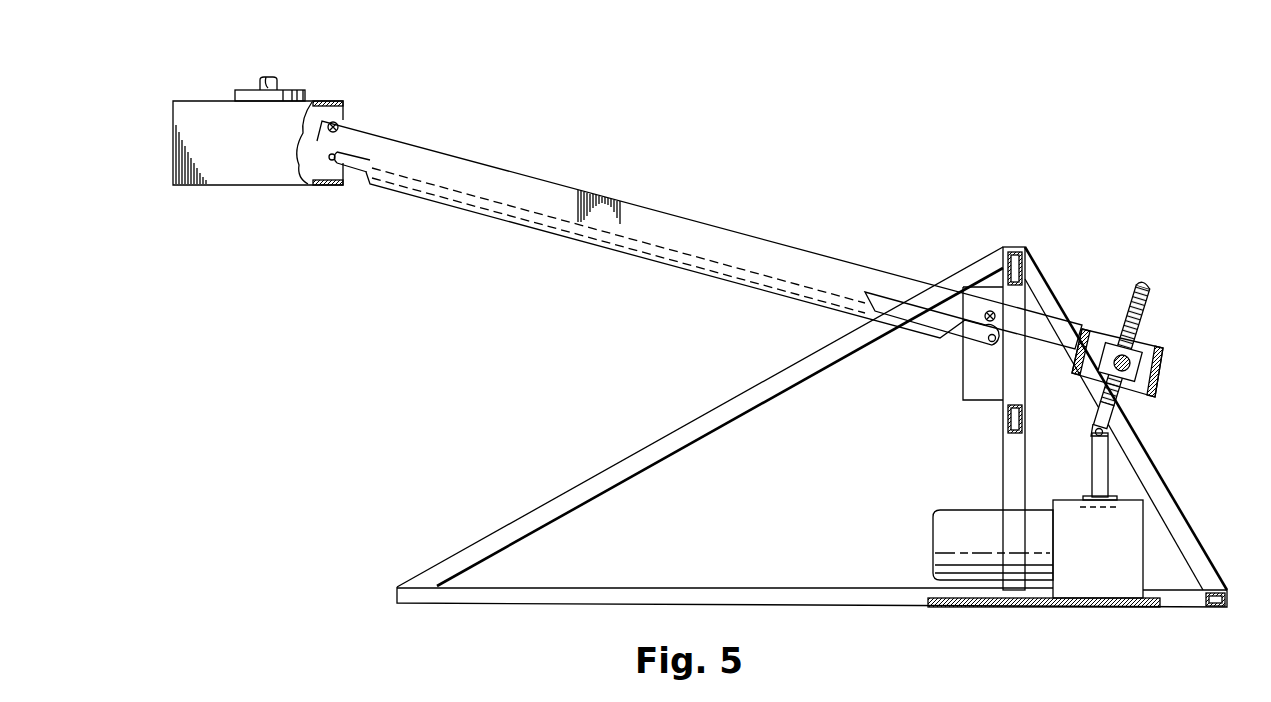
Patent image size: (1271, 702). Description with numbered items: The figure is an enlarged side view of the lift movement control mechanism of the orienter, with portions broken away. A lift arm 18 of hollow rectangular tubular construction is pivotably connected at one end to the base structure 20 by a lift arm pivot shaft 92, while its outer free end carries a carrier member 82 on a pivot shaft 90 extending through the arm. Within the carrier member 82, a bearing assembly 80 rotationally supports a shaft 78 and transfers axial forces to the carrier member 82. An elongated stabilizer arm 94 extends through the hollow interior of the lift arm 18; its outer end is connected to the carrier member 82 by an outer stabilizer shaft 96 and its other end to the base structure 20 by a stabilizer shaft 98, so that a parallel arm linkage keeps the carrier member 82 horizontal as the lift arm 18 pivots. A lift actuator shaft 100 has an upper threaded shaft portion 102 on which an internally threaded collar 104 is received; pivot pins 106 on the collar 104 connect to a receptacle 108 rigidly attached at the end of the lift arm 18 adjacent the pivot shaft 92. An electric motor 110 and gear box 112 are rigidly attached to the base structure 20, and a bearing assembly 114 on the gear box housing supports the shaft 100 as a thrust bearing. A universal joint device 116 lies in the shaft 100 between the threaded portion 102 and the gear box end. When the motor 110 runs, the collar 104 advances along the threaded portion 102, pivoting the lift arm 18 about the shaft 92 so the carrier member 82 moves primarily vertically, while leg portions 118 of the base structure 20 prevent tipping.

The lift arm 18 is at (685, 230).
The base structure 20 is at (1193, 548).
The shaft 78 is at (283, 85).
The bearing assembly 80 is at (243, 90).
The carrier member 82 is at (180, 138).
The pivot shaft 90 is at (337, 125).
The lift arm pivot shaft 92 is at (990, 311).
The stabilizer arm 94 is at (366, 173).
The outer stabilizer shaft 96 is at (328, 162).
The stabilizer shaft 98 is at (995, 344).
The lift actuator shaft 100 is at (1112, 414).
The threaded shaft portion 102 is at (1150, 298).
The internally threaded collar 104 is at (1140, 348).
The pivot pins 106 is at (1160, 376).
The receptacle 108 is at (1098, 328).
The electric motor 110 is at (960, 516).
The gear box 112 is at (1091, 580).
The bearing assembly 114 is at (1078, 496).
The universal joint device 116 is at (1114, 437).
The leg portions 118 is at (618, 597).